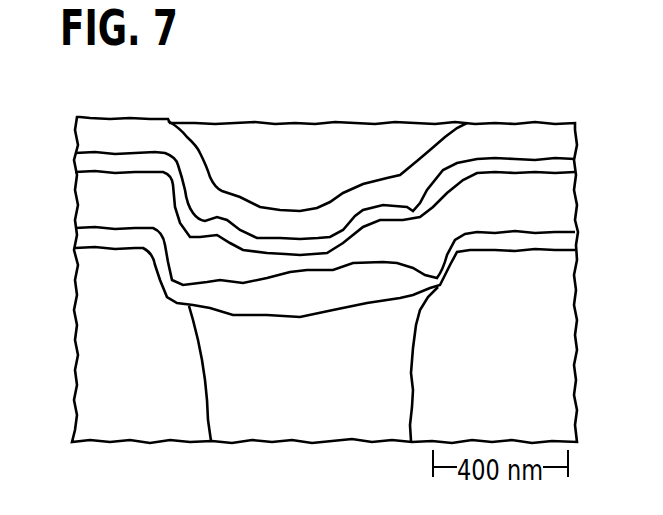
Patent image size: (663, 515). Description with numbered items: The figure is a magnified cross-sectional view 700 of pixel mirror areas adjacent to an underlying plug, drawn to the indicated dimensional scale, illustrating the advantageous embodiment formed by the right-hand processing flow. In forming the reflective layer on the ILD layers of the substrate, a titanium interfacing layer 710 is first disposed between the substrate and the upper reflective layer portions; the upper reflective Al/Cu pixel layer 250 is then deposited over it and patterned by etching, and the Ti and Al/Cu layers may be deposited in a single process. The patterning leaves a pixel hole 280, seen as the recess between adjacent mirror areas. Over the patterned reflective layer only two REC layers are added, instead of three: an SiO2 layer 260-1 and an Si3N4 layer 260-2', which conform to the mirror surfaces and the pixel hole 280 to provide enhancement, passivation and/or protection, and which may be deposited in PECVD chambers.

The example view 700 is at (318, 54).
The SiO2 layer 260-1 is at (107, 163).
The Si3N4 layer 260-2' is at (325, 155).
The pixel hole 280 is at (365, 157).
The upper reflective layer 250 is at (512, 212).
The titanium interfacing layer 710 is at (287, 288).